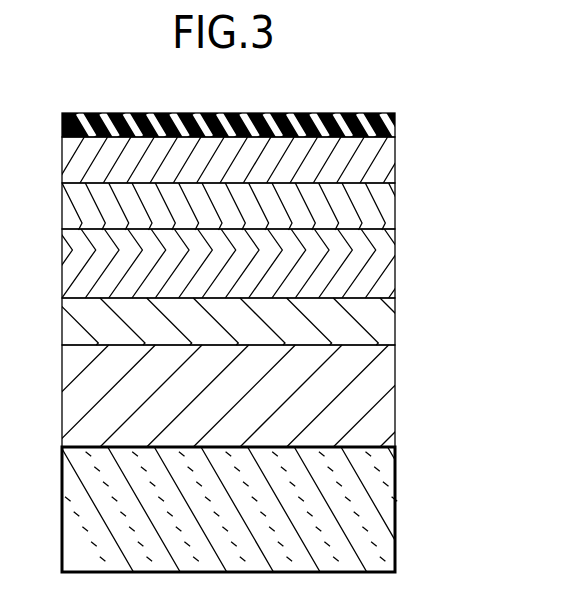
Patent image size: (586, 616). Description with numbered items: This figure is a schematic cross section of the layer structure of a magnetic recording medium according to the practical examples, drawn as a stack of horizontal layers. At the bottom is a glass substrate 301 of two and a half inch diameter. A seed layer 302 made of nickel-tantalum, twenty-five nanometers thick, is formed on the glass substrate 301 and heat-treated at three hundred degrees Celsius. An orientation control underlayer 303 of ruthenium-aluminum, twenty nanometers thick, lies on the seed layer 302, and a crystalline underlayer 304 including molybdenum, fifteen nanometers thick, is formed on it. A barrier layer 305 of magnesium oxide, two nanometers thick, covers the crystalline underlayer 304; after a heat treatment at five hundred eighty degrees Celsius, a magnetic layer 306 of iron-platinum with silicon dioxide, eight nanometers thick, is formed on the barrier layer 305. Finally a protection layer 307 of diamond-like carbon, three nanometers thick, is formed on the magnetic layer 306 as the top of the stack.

The glass substrate 301 is at (381, 508).
The seed layer 302 is at (381, 396).
The orientation control underlayer 303 is at (383, 323).
The crystalline underlayer 304 is at (382, 267).
The barrier layer 305 is at (383, 208).
The magnetic layer 306 is at (397, 160).
The protection layer 307 is at (396, 126).